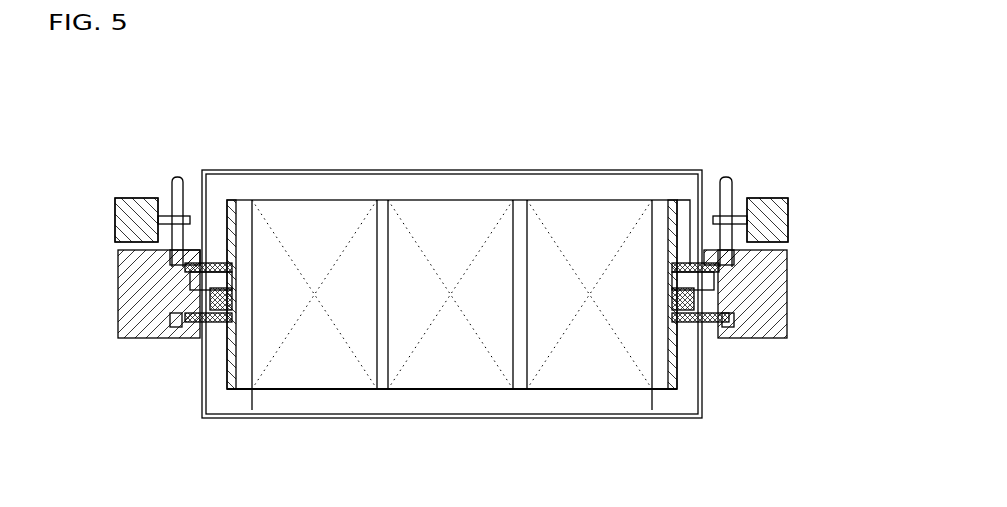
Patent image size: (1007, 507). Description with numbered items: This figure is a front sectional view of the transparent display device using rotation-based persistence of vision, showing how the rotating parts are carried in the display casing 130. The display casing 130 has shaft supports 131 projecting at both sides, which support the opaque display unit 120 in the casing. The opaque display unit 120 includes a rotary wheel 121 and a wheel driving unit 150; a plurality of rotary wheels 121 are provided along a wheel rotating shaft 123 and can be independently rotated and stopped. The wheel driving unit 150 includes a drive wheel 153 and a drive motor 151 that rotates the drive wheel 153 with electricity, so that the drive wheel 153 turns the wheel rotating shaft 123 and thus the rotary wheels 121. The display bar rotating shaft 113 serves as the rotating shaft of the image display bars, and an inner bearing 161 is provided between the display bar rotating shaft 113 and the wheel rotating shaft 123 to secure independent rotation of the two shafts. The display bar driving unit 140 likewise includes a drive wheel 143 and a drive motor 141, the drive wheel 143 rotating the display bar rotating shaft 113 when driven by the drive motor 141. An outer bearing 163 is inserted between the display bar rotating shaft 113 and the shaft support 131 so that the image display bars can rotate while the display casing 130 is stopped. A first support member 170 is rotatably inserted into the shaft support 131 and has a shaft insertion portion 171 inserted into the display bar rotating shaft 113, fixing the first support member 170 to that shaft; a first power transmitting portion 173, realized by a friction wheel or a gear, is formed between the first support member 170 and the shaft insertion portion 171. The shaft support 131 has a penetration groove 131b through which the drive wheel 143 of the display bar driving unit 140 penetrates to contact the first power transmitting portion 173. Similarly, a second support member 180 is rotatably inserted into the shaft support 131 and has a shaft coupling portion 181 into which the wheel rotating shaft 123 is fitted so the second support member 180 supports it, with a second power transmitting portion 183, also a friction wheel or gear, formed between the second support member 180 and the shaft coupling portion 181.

The display bar rotating shaft 113 is at (700, 170).
The opaque display unit 120 is at (360, 196).
The rotary wheel 121 is at (312, 198).
The wheel rotating shaft 123 is at (205, 258).
The display casing 130 is at (462, 170).
The shaft support 131 is at (115, 224).
The penetration groove 131b is at (118, 200).
The display bar driving unit 140 is at (127, 87).
The drive motor 141 is at (132, 196).
The drive wheel 143 is at (173, 177).
The wheel driving unit 150 is at (778, 87).
The drive motor 151 is at (786, 197).
The drive wheel 153 is at (730, 177).
The inner bearing 161 is at (252, 395).
The outer bearing 163 is at (197, 336).
The first support member 170 is at (118, 290).
The shaft insertion portion 171 is at (212, 328).
The first power transmitting portion 173 is at (172, 338).
The second support member 180 is at (789, 284).
The shaft coupling portion 181 is at (788, 258).
The second power transmitting portion 183 is at (717, 338).